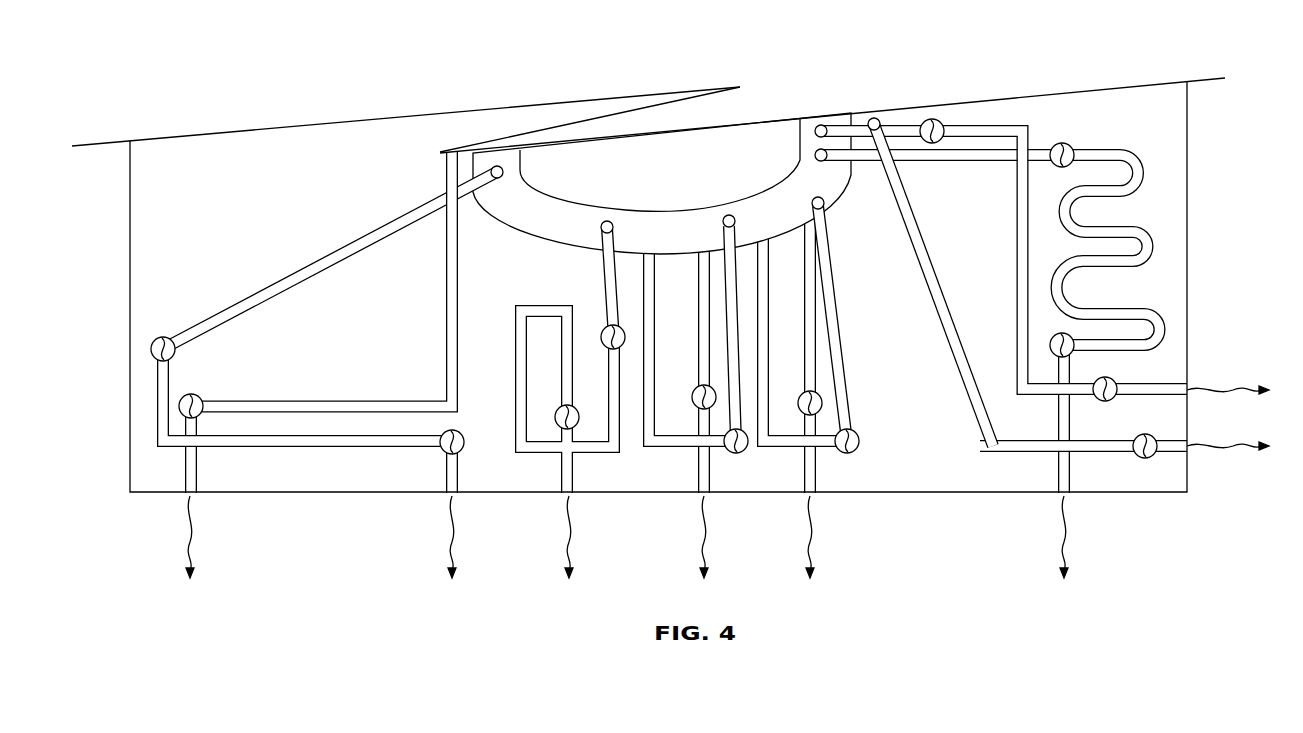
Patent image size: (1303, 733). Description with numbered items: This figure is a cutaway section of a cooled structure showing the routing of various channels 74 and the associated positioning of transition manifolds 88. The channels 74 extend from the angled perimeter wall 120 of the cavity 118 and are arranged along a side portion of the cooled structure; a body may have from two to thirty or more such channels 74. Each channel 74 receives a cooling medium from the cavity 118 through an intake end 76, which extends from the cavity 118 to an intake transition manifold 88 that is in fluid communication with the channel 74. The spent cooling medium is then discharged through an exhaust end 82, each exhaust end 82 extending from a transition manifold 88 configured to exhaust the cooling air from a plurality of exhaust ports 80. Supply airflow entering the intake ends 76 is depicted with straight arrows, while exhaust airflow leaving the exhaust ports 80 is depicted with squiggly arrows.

The channel 74 is at (1154, 236).
The intake end 76 is at (340, 250).
The exhaust port 80 is at (196, 494).
The exhaust end 82 is at (186, 470).
The transition manifold 88 is at (152, 347).
The cavity 118 is at (700, 143).
The angled perimeter wall 120 is at (670, 228).